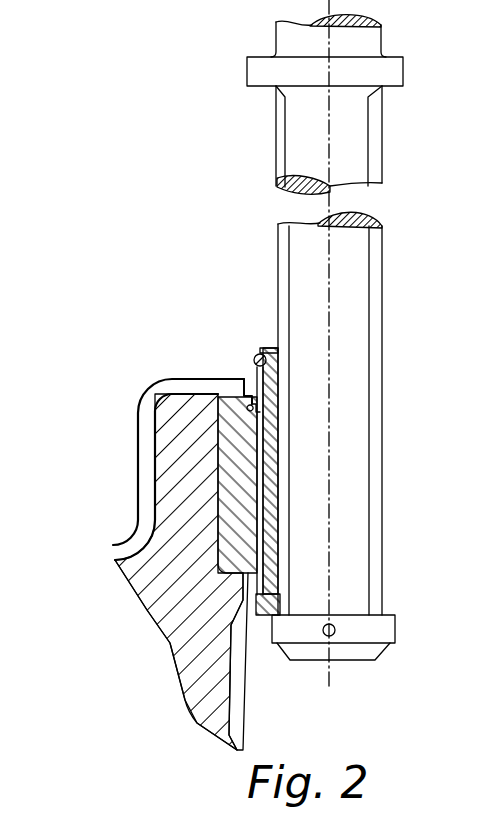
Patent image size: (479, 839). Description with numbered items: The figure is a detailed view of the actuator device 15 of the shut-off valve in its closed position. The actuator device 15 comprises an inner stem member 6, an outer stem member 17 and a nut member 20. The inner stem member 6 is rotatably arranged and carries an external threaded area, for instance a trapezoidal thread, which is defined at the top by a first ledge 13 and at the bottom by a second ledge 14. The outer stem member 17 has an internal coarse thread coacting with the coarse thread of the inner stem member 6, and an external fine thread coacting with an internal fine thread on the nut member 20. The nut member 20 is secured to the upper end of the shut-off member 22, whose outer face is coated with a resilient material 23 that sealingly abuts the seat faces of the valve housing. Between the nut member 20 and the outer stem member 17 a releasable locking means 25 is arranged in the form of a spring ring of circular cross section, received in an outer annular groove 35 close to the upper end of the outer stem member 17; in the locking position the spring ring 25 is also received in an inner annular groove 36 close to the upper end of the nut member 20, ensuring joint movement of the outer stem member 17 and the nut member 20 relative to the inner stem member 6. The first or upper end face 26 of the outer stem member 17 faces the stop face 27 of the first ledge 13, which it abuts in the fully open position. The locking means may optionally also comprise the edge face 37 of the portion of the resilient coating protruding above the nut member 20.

The inner stem member 6 is at (350, 282).
The first ledge 13 is at (392, 66).
The second ledge 14 is at (383, 623).
The actuator device 15 is at (149, 314).
The outer stem member 17 is at (255, 366).
The nut member 20 is at (172, 380).
The shut-off member 22 is at (168, 493).
The resilient material 23 is at (128, 542).
The releasable locking means 25 is at (252, 356).
The first end face 26 is at (268, 346).
The stop face 27 is at (259, 88).
The outer annular groove 35 is at (253, 346).
The inner annular groove 36 is at (230, 440).
The edge face 37 is at (246, 374).